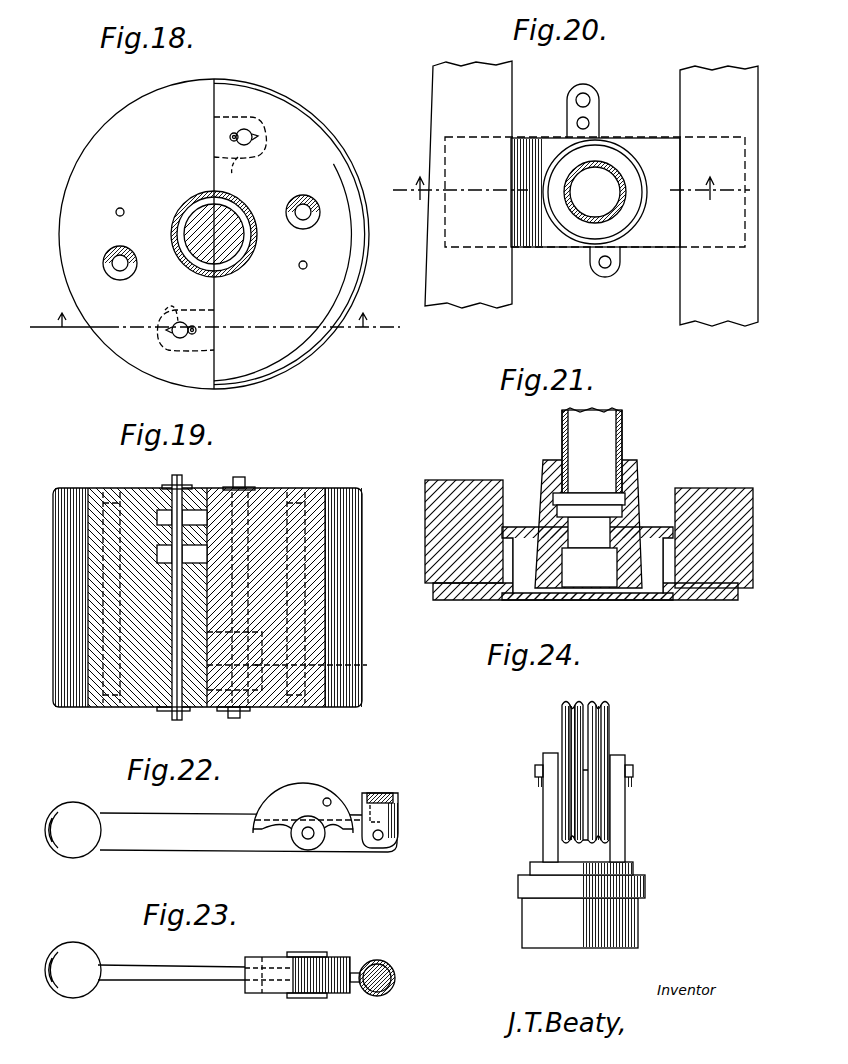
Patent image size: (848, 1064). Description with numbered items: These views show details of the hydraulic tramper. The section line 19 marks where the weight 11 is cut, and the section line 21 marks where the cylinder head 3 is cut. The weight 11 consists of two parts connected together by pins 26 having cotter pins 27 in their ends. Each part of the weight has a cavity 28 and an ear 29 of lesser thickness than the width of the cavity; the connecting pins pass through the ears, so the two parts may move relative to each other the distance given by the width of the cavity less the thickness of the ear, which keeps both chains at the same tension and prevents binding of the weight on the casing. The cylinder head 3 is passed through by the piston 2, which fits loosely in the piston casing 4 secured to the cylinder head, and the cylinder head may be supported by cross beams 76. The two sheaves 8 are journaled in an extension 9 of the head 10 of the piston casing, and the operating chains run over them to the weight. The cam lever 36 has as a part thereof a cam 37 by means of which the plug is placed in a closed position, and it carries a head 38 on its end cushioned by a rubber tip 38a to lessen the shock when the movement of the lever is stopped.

In FIG. 18, the piston 2 is at (240, 238).
In FIG. 20, the cylinder head 3 is at (595, 180).
In FIG. 21, the cylinder head 3 is at (542, 483).
In FIG. 18, the piston casing 4 is at (184, 208).
In FIG. 20, the piston casing 4 is at (605, 167).
In FIG. 21, the piston casing 4 is at (622, 443).
In FIG. 24, the sheaves 8 is at (593, 727).
In FIG. 24, the extension 9 is at (622, 822).
In FIG. 24, the head of the piston casing 10 is at (645, 882).
In FIG. 18, the weight 11 is at (214, 234).
In FIG. 19, the weight 11 is at (363, 612).
In FIG. 18, the section line 19- 19 is at (215, 327).
In FIG. 20, the section line 21- 21 is at (571, 191).
In FIG. 18, the pins 26 is at (247, 130).
In FIG. 19, the pins 26 is at (182, 484).
In FIG. 18, the cotter pins 27 is at (252, 145).
In FIG. 19, the cotter pins 27 is at (163, 486).
In FIG. 18, the cavity 28 is at (193, 239).
In FIG. 19, the cavity 28 is at (157, 562).
In FIG. 18, the ear 29 is at (252, 160).
In FIG. 19, the ear 29 is at (157, 542).
In FIG. 22, the cam lever 36 is at (162, 838).
In FIG. 23, the cam lever 36 is at (160, 980).
In FIG. 22, the cam 37 is at (310, 790).
In FIG. 23, the cam 37 is at (340, 958).
In FIG. 22, the head 38 is at (398, 808).
In FIG. 23, the head 38 is at (372, 997).
In FIG. 22, the rubber tip 38a is at (382, 795).
In FIG. 23, the rubber tip 38a is at (392, 970).
In FIG. 20, the cross beams 76 is at (591, 193).
In FIG. 21, the cross beams 76 is at (458, 483).